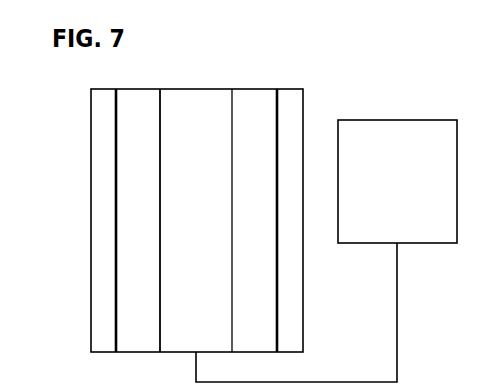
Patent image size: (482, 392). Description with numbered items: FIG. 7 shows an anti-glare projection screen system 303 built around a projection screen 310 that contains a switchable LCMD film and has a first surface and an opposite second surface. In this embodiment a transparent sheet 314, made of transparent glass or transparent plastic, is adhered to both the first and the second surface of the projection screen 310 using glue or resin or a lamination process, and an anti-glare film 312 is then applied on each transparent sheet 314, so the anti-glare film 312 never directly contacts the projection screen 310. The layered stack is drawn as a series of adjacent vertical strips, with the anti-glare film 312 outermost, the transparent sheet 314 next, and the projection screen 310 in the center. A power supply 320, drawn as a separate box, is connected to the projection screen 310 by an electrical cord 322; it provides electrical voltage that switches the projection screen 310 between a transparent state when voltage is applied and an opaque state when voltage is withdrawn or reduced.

The anti-glare projection screen system 303 is at (276, 190).
The projection screen 310 is at (187, 88).
The anti-glare film 312 is at (98, 88).
The transparent sheet 314 is at (140, 88).
The power supply 320 is at (395, 120).
The electrical cord 322 is at (295, 382).